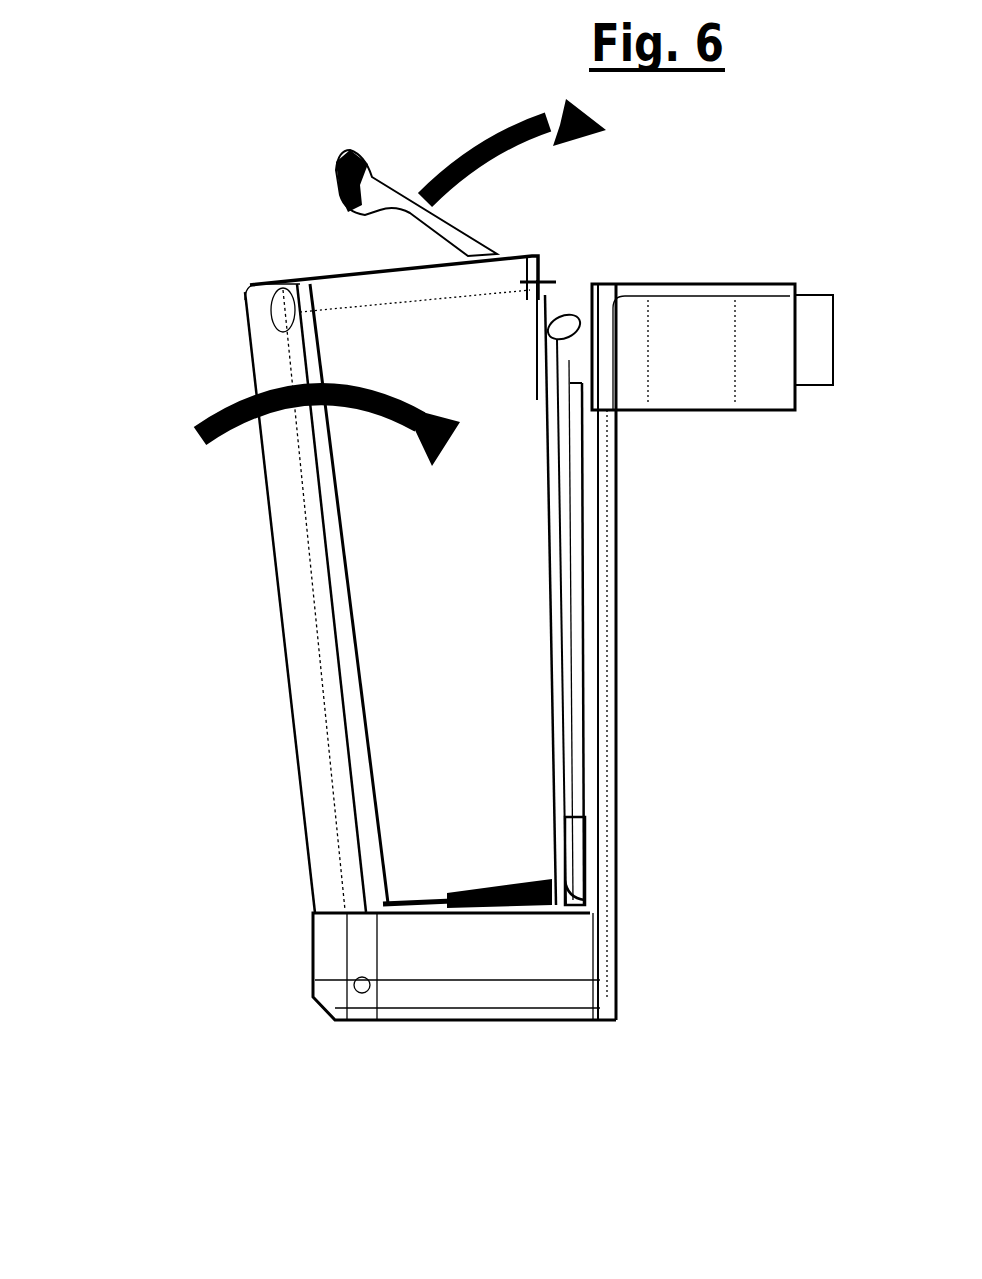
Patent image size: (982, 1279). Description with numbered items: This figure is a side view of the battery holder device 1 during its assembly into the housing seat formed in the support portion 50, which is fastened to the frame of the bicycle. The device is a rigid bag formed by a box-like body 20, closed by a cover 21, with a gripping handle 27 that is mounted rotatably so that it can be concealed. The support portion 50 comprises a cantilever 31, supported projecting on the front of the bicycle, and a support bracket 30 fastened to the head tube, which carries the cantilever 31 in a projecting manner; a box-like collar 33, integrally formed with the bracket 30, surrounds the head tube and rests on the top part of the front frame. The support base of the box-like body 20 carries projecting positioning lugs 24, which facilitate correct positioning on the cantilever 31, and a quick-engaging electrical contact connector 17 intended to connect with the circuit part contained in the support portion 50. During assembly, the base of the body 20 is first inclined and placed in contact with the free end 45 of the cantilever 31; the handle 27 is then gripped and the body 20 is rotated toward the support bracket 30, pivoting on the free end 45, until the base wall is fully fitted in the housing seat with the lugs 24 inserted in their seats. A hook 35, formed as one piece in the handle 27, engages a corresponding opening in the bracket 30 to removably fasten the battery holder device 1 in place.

The battery holder device 1 is at (570, 257).
The quick-engaging electrical contact connector 17 is at (507, 887).
The box-like body 20 is at (388, 530).
The cover 21 is at (325, 567).
The positioning lugs 24 is at (575, 904).
The gripping handle 27 is at (388, 184).
The support bracket 30 is at (600, 700).
The cantilever 31 is at (533, 995).
The box-like collar 33 is at (712, 332).
The hook 35 is at (574, 342).
The free end 45 is at (298, 924).
The support portion 50 is at (723, 256).